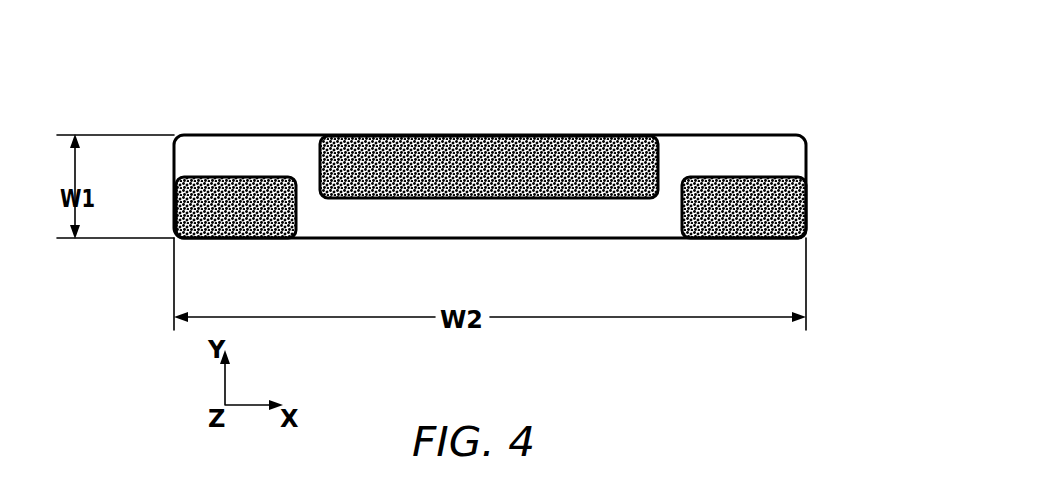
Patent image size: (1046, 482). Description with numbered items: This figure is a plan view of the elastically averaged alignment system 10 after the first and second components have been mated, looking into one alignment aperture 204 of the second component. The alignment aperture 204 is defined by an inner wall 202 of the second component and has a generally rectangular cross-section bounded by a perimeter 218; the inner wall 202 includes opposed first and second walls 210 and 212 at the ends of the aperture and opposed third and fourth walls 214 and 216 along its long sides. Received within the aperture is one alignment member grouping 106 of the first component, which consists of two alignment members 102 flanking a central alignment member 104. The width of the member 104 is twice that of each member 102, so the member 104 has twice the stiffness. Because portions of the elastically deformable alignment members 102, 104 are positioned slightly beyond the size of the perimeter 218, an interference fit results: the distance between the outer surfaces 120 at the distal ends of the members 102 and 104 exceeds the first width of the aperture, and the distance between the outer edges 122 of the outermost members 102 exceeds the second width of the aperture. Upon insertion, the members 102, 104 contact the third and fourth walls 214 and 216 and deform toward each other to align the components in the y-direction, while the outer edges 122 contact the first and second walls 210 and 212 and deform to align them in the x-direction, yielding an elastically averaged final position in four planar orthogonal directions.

The system 10 is at (771, 78).
The alignment member 102 is at (236, 160).
The alignment member 104 is at (486, 212).
The alignment member grouping 106 is at (553, 106).
The outer surface 120 is at (490, 135).
The outer edge 122 is at (174, 200).
The inner wall 202 is at (705, 148).
The alignment aperture 204 is at (813, 124).
The first wall 210 is at (185, 158).
The second wall 212 is at (806, 170).
The third wall 214 is at (279, 136).
The fourth wall 216 is at (587, 238).
The perimeter 218 is at (368, 240).